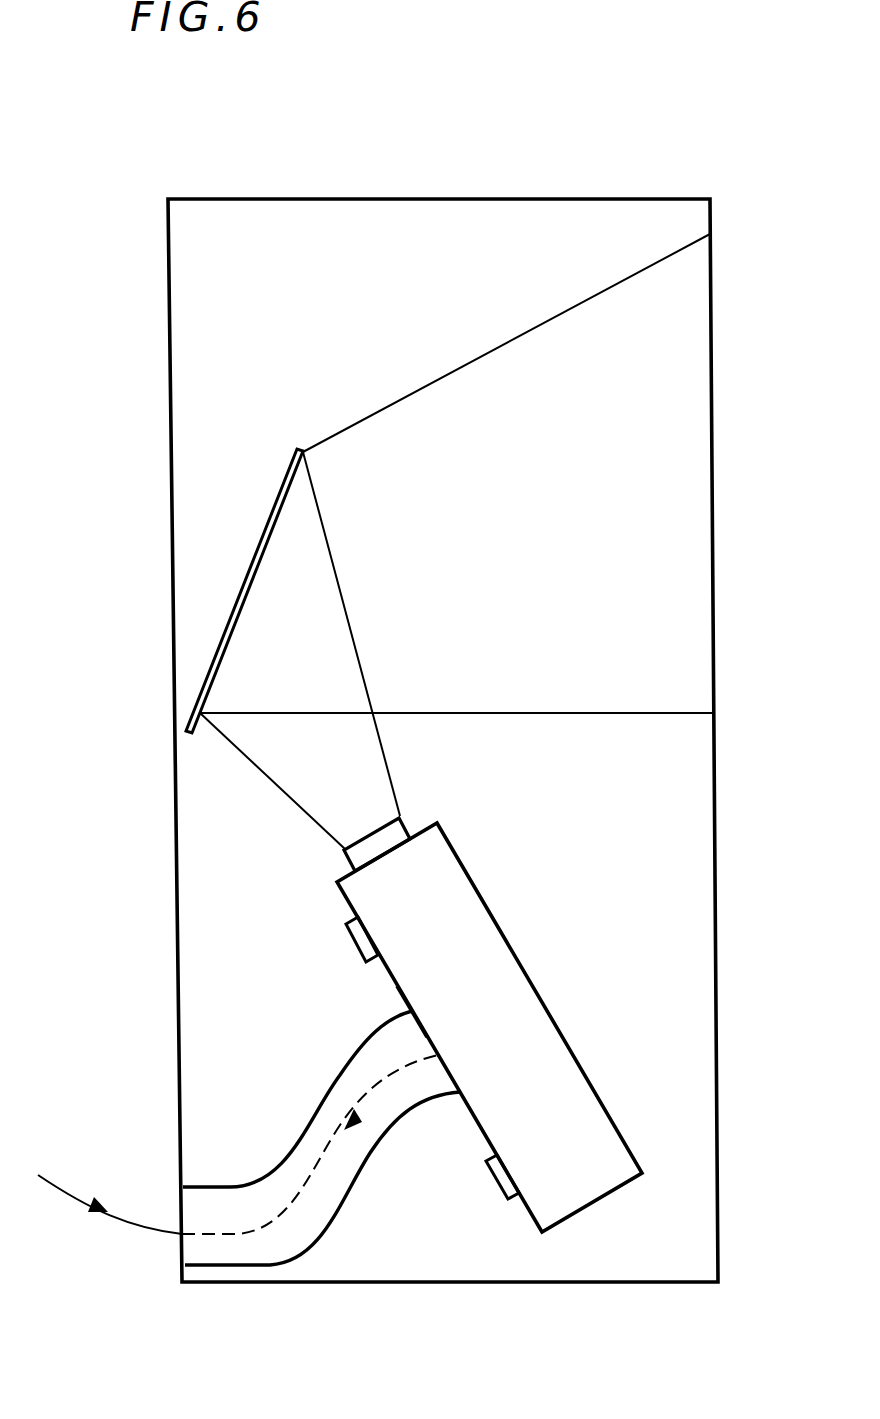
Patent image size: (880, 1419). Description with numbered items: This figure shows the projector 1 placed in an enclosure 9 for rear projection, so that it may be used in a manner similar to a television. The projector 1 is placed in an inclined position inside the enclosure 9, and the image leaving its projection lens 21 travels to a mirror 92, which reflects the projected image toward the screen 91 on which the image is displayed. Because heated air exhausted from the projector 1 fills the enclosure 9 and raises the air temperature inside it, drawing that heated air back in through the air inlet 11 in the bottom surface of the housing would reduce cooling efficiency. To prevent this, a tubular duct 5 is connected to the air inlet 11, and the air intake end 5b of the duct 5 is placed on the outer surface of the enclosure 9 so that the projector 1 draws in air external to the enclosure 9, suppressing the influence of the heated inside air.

The enclosure 9 is at (595, 178).
The screen 91 is at (727, 224).
The mirror 92 is at (270, 522).
The projector 1 is at (585, 1073).
The projection lens 21 is at (405, 821).
The air inlet 11 is at (398, 1007).
The duct 5 is at (352, 1196).
The air intake end 5b is at (170, 1203).